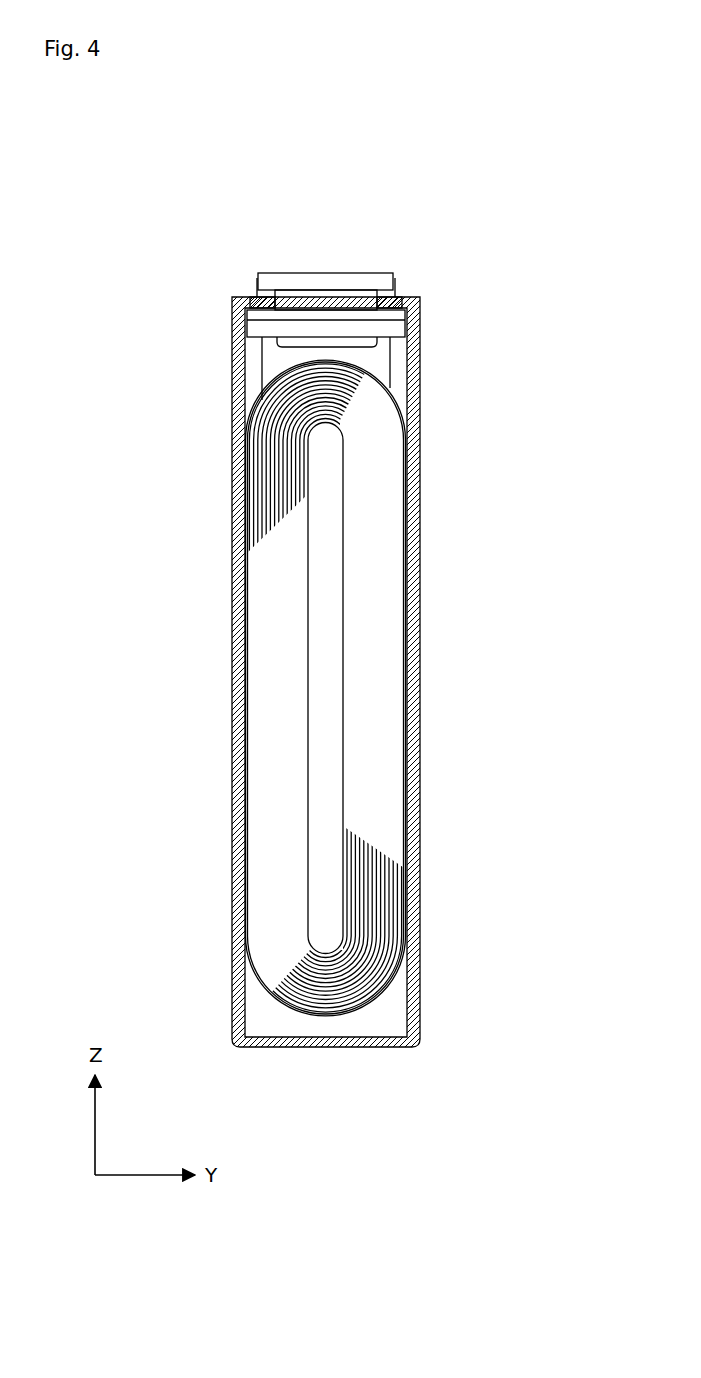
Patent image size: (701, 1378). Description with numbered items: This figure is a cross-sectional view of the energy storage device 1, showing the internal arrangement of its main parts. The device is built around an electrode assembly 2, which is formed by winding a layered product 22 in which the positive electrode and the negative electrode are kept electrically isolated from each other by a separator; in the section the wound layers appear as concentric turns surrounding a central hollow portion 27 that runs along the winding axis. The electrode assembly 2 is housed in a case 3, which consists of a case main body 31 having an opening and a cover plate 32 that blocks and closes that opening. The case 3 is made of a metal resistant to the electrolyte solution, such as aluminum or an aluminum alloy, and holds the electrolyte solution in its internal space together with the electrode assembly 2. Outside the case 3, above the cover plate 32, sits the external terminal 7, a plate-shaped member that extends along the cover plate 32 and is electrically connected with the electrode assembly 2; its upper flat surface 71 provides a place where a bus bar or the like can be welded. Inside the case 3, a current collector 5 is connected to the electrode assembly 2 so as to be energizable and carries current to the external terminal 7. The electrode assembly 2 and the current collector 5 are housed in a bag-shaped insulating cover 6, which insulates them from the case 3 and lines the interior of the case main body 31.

The energy storage device 1 is at (376, 605).
The electrode assembly 2 is at (326, 676).
The layered product 22 is at (396, 398).
The hollow portion 27 is at (325, 708).
The case 3 is at (227, 312).
The case main body 31 is at (233, 352).
The cover plate 32 is at (239, 294).
The current collector 5 is at (255, 377).
The insulating cover 6 is at (246, 1008).
The external terminal 7 is at (324, 241).
The surface 71 is at (340, 273).